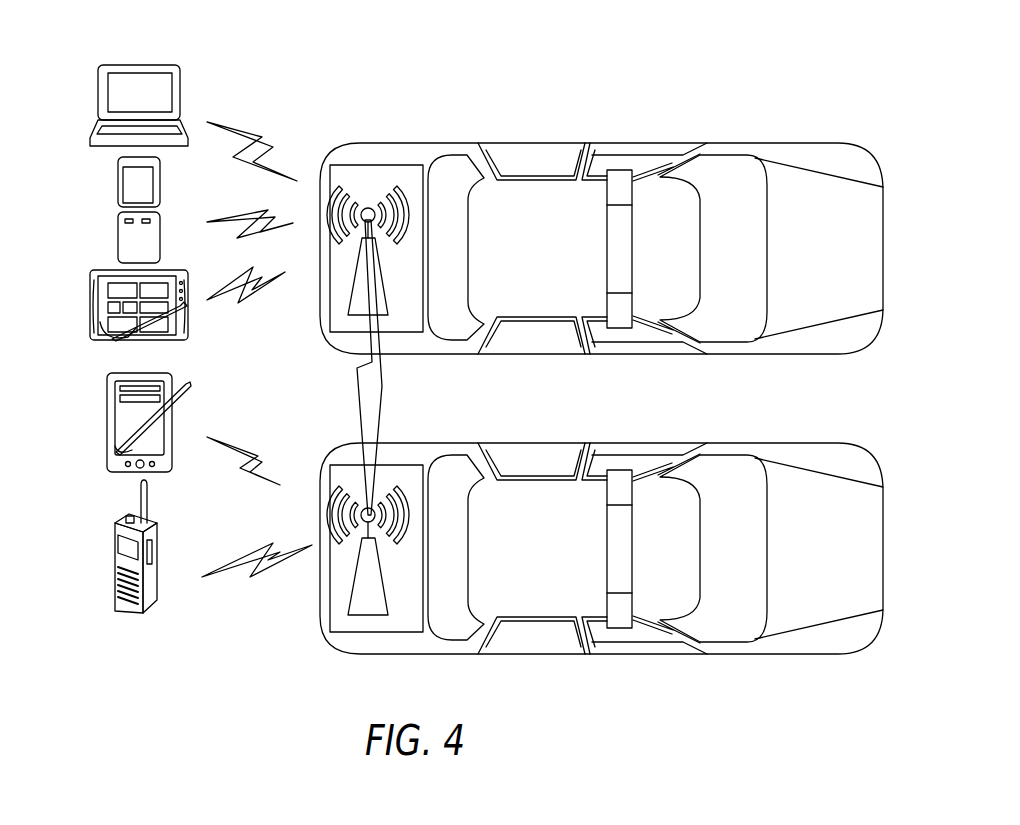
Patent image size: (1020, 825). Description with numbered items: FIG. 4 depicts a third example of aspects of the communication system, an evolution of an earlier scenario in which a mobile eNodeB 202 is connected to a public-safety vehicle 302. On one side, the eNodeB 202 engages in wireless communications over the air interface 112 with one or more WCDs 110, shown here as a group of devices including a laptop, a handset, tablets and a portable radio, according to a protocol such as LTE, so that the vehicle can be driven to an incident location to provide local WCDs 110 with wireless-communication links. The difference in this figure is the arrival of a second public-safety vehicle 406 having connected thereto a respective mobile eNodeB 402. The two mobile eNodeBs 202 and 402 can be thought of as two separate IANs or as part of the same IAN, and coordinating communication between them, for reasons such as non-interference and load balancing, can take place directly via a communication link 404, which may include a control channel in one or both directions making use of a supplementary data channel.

The WCDs 110 is at (80, 3).
The air interface 112 is at (238, 131).
The eNodeB 202 is at (385, 294).
The public-safety vehicle 302 is at (623, 142).
The mobile eNodeB 402 is at (371, 550).
The communication link 404 is at (391, 419).
The second public-safety vehicle 406 is at (623, 442).